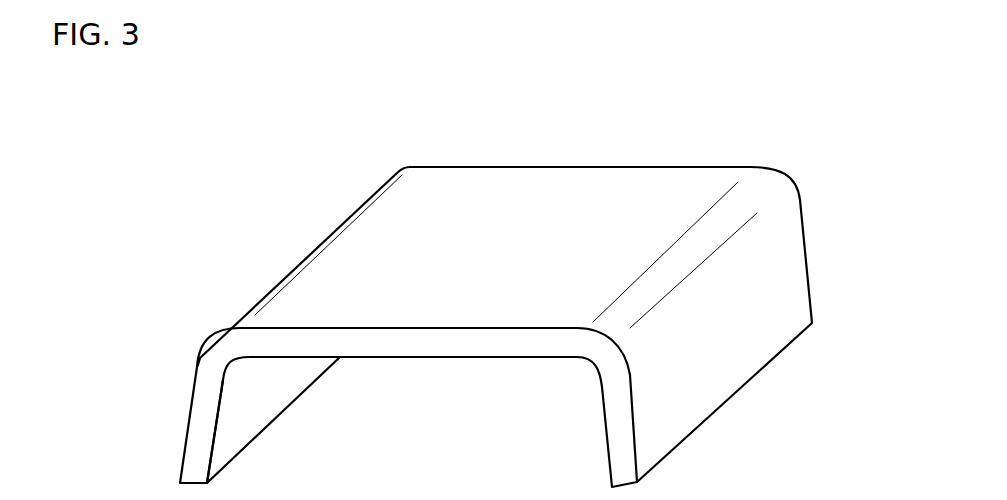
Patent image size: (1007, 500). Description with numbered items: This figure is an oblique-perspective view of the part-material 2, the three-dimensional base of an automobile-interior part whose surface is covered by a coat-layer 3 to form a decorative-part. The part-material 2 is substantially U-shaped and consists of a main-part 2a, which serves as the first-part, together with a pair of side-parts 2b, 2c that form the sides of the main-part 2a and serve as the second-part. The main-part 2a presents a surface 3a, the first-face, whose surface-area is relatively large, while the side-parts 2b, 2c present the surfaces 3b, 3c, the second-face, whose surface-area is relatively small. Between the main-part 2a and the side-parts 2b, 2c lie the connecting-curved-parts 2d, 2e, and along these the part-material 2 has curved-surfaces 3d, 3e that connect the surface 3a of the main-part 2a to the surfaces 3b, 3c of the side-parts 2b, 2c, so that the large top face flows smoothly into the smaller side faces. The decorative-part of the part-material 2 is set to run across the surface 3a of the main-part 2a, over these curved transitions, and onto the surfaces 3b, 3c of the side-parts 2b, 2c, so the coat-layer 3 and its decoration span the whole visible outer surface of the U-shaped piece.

The part-material 2 is at (552, 170).
The coat-layer 3 is at (622, 173).
The main-part 2a is at (473, 297).
The surface 3a is at (388, 302).
The side-part 2b is at (735, 327).
The surface 3b is at (688, 395).
The side-part 2c is at (195, 392).
The surface 3c is at (188, 433).
The connecting-curved-part 2d is at (750, 193).
The curved-surface 3d is at (692, 253).
The connecting-curved-part 2e is at (345, 228).
The curved-surface 3e is at (306, 264).